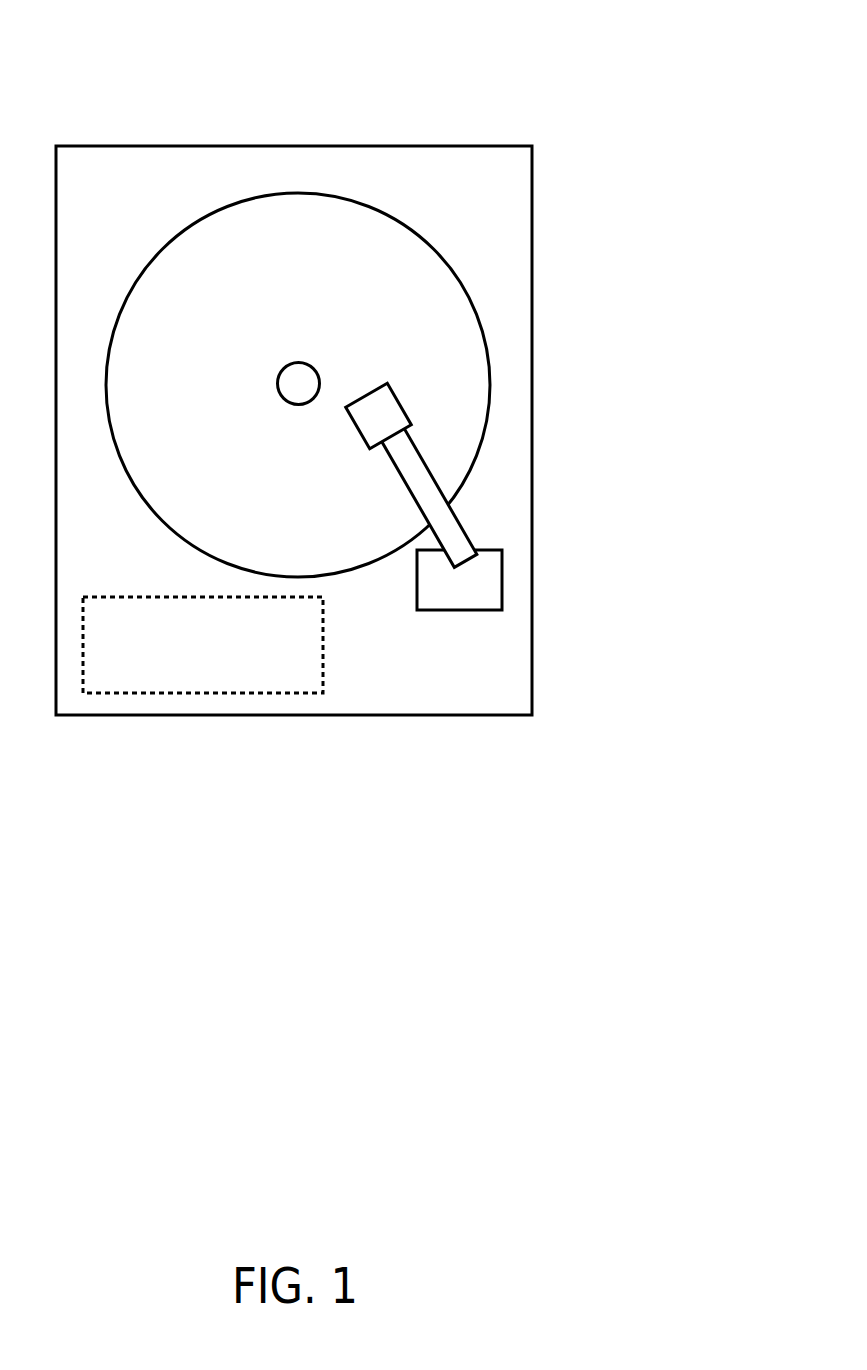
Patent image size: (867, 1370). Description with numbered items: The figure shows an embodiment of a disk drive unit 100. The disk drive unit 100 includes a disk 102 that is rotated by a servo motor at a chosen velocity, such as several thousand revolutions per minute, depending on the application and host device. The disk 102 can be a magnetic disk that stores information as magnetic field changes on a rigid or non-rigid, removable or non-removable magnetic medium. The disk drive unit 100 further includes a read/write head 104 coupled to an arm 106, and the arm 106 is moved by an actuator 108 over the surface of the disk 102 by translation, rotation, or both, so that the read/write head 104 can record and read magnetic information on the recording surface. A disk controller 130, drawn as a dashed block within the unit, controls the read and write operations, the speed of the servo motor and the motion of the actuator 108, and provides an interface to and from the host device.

The disk drive unit 100 is at (552, 70).
The disk 102 is at (177, 237).
The read/write head 104 is at (407, 424).
The arm 106 is at (433, 482).
The actuator 108 is at (417, 592).
The disk controller 130 is at (232, 678).